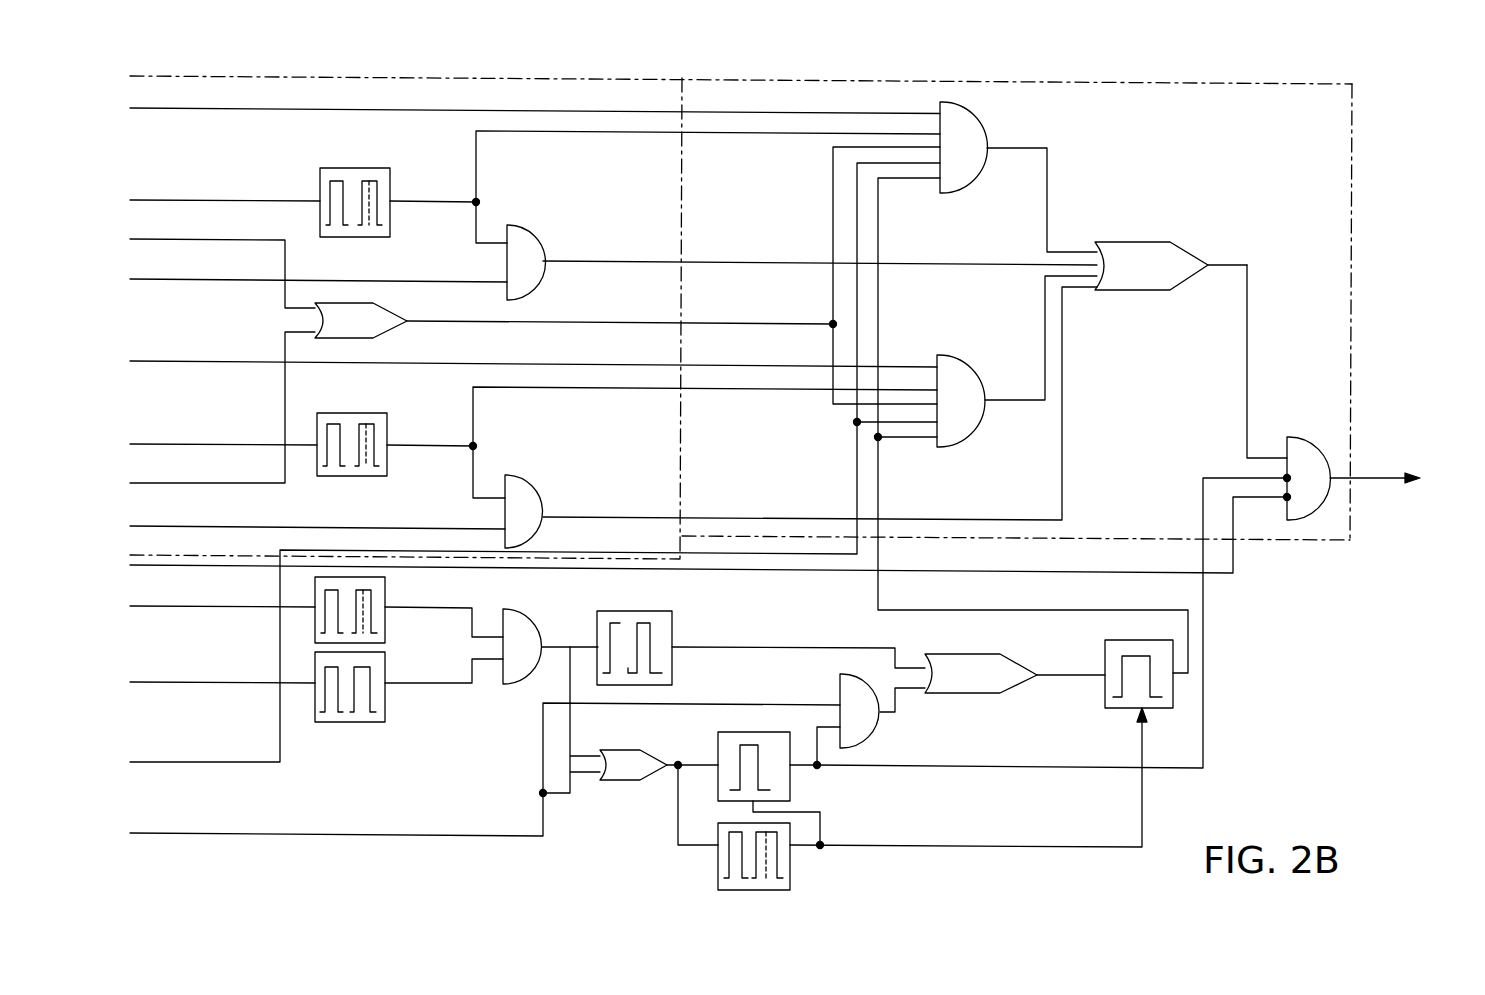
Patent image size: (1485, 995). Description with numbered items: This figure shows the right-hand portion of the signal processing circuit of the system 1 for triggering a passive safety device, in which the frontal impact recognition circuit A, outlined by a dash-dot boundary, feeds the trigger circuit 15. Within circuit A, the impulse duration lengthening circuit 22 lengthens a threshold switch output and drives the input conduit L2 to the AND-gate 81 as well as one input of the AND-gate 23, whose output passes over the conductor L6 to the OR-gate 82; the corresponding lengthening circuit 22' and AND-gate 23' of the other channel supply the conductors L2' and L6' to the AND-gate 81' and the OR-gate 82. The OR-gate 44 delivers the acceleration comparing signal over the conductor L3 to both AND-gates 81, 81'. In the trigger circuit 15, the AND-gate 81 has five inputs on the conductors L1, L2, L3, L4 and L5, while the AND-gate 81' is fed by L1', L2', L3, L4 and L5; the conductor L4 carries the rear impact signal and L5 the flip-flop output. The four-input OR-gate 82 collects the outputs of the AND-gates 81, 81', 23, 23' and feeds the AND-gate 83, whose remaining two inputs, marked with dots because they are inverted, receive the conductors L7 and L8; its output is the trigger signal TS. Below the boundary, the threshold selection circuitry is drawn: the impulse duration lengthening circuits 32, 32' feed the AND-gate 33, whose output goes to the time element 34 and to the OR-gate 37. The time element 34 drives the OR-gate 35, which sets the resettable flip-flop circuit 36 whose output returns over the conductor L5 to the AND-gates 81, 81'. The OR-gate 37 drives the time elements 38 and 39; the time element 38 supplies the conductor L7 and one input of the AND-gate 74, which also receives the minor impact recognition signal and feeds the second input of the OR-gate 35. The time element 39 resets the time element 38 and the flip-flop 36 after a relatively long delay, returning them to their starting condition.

The system for triggering a passive safety device 1 is at (1372, 131).
The frontal impact recognition circuit A is at (432, 80).
The trigger circuit 15 is at (1276, 543).
The impulse duration lengthening circuit 22 is at (355, 180).
The impulse duration lengthening circuit 22' is at (392, 444).
The AND-gate 23 is at (552, 258).
The AND-gate 23' is at (557, 511).
The OR-gate 44 is at (376, 327).
The AND-gate 81 is at (995, 139).
The AND-gate 81' is at (977, 421).
The OR-gate 82 is at (1155, 252).
The AND-gate 83 is at (1305, 452).
The impulse duration lengthening circuit 32 is at (383, 608).
The impulse duration lengthening circuit 32' is at (391, 695).
The AND-gate 33 is at (525, 627).
The time element 34 is at (672, 622).
The OR-gate 35 is at (1007, 693).
The flip-flop circuit 36 is at (1173, 697).
The OR-gate 37 is at (615, 780).
The time element 38 is at (790, 785).
The time element 39 is at (790, 878).
The AND-gate 74 is at (878, 735).
The trigger signal TS is at (1395, 480).
The conductor L1 is at (535, 100).
The conductor L1' is at (533, 384).
The input conduit L2 is at (708, 187).
The conductor L2' is at (705, 442).
The conductor L3 is at (556, 322).
The conductor L4 is at (587, 556).
The conductor L5 is at (905, 612).
The conductor L6 is at (820, 243).
The conductor L6' is at (820, 403).
The input conductor L7 is at (1203, 736).
The conductor L8 is at (1212, 577).